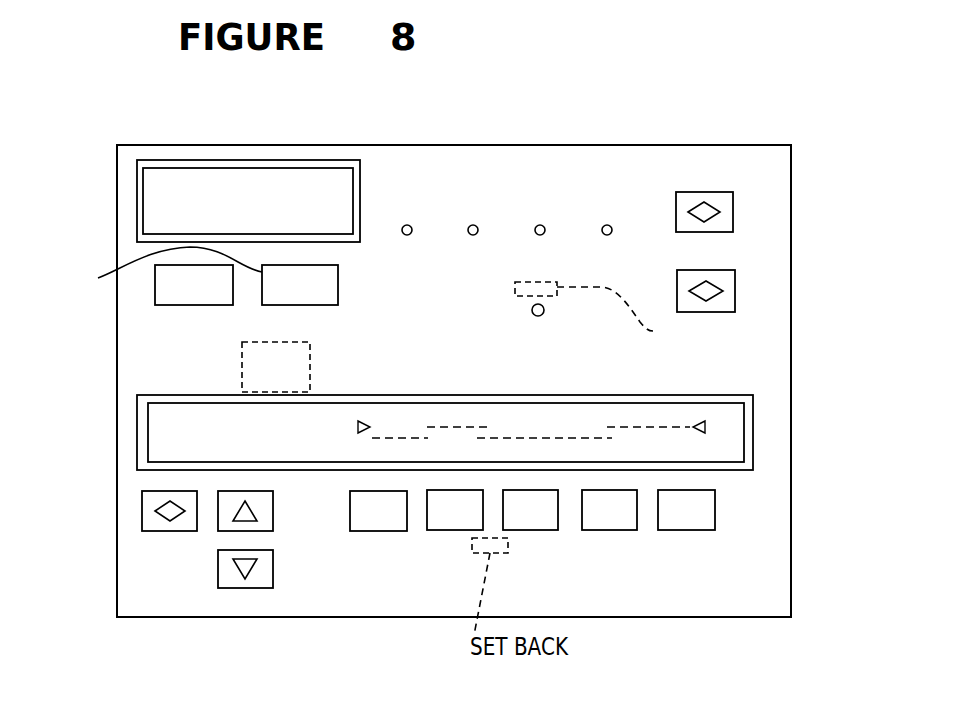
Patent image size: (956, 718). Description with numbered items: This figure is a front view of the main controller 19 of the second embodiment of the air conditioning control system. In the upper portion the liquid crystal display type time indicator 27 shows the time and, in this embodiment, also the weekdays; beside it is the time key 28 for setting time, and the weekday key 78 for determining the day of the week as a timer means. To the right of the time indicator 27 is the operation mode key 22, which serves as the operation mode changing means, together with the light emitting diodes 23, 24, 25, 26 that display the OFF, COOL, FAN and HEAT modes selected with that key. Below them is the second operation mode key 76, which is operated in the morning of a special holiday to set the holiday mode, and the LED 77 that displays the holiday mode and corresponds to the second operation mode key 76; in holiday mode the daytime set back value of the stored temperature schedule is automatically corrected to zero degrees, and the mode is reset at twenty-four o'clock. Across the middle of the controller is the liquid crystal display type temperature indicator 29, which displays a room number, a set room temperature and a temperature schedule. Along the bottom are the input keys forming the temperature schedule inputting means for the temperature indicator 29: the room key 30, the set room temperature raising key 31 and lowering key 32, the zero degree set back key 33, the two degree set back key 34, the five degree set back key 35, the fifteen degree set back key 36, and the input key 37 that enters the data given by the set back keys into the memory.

The main controller 19 is at (791, 170).
The operation mode key 22 is at (733, 214).
The light emitting diode for OFF mode 23 is at (410, 235).
The light emitting diode for COOL mode 24 is at (476, 235).
The light emitting diode for FAN mode 25 is at (538, 235).
The light emitting diode for HEAT mode 26 is at (604, 235).
The time indicator 27 is at (268, 160).
The time key 28 is at (195, 305).
The temperature indicator 29 is at (753, 428).
The room key 30 is at (170, 531).
The set room temperature raising key 31 is at (273, 511).
The set room temperature lowering key 32 is at (273, 568).
The 0° C. set back key 33 is at (380, 531).
The 2° C. set back key 34 is at (460, 530).
The 5° C. set back key 35 is at (533, 530).
The 15° C. set back key 36 is at (612, 530).
The input key 37 is at (686, 530).
The second operation mode key 76 is at (735, 293).
The LED for displaying holiday mode 77 is at (544, 310).
The weekday key 78 is at (338, 288).